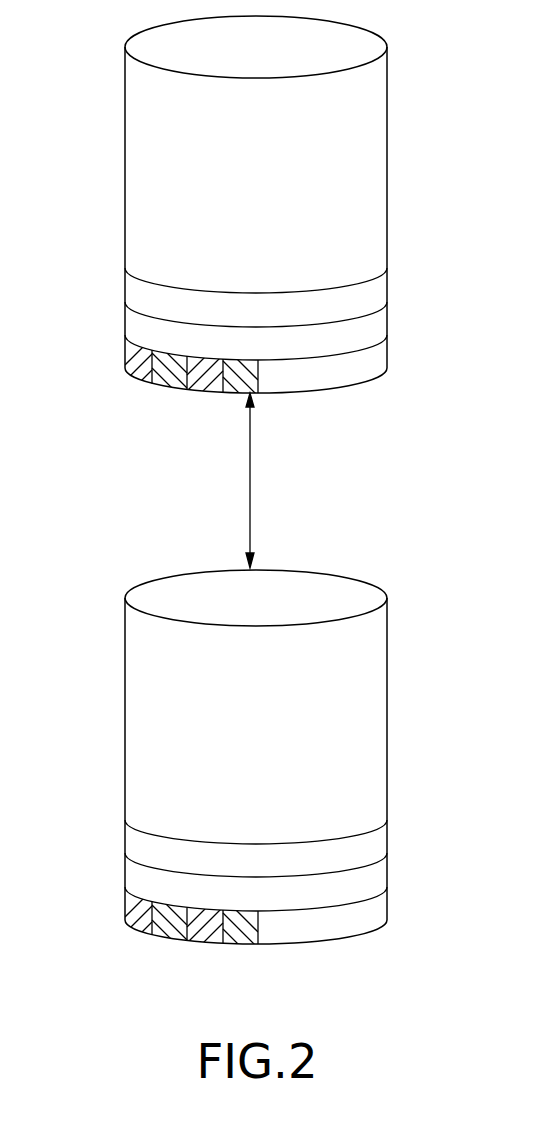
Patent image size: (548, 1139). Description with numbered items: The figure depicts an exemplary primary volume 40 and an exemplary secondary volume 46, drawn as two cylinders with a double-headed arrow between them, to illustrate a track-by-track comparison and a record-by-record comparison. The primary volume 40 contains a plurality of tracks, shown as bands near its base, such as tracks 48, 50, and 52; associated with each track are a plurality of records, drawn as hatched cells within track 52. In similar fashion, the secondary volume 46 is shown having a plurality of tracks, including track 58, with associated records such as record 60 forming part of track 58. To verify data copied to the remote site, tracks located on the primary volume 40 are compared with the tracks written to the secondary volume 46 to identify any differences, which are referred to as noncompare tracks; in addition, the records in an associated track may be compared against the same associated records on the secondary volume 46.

The primary volume 40 is at (245, 194).
The secondary volume 46 is at (244, 744).
The track 48 is at (380, 287).
The track 50 is at (380, 322).
The track 52 is at (380, 357).
The track 58 is at (380, 906).
The record 60 is at (232, 944).